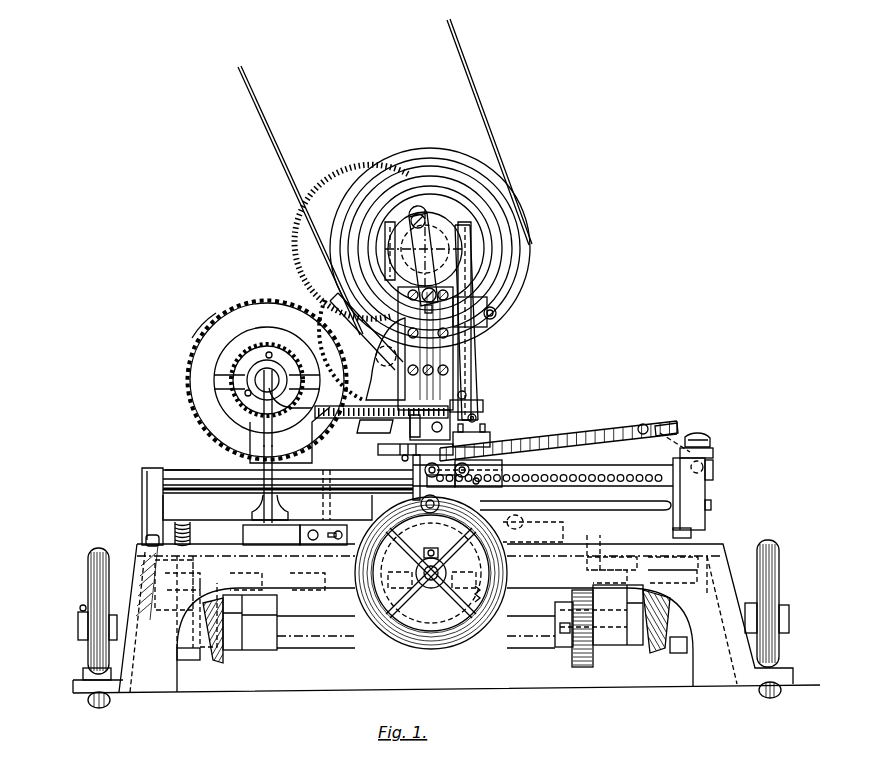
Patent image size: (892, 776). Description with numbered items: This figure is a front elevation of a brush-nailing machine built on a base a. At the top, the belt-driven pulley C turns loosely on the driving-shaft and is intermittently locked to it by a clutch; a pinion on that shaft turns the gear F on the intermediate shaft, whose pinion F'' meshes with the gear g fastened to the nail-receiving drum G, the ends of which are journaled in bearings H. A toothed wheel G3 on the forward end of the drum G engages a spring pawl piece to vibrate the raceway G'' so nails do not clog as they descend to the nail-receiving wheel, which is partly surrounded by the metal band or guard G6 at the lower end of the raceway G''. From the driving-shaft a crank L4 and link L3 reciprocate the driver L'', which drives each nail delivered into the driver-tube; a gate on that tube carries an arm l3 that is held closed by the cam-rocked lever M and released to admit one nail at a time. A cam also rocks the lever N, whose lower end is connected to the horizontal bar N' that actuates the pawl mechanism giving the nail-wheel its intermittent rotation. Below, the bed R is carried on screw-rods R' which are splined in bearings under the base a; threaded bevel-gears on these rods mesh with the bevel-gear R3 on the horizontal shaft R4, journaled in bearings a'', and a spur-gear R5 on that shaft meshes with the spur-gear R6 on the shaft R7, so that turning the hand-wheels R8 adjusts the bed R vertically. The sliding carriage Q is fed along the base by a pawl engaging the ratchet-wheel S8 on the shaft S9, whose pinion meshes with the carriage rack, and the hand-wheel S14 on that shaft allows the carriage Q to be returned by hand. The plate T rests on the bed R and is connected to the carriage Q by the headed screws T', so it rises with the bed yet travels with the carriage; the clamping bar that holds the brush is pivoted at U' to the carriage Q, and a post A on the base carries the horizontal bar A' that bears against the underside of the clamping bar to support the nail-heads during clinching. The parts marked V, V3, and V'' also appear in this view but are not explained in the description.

The base a is at (446, 604).
The cranks or hand-wheels R8 is at (88, 570).
The crank or hand-wheel S14 is at (436, 650).
The shaft S9 is at (431, 588).
The ratchet-wheel S8 is at (471, 596).
The pulley C is at (412, 248).
The crank L4 is at (438, 232).
The link L3 is at (421, 259).
The driver L'' is at (448, 321).
The lever N is at (483, 322).
The horizontal bar N' is at (501, 381).
The lever M is at (483, 404).
The arm l3 is at (485, 418).
The pinion F'' is at (381, 359).
The gear F is at (385, 209).
The nail-receiving drum G is at (267, 380).
The gear g is at (203, 331).
The toothed wheel G3 is at (290, 365).
The raceway G'' is at (330, 416).
The bearings H is at (272, 482).
The metal band or guard G6 is at (423, 432).
The post A is at (254, 499).
The horizontal metal bar A' is at (182, 453).
The bed R is at (267, 495).
The pivot U' is at (450, 477).
The plate T is at (543, 480).
The carriage Q is at (693, 489).
The headed screws T' is at (714, 484).
The nut V'' is at (711, 439).
The link V3 is at (680, 423).
The graduated bar V is at (558, 435).
The shaft R7 is at (295, 617).
The horizontal shaft R4 is at (332, 638).
The bearings a'' is at (433, 617).
The bevel-gear R3 is at (222, 660).
The spur-gear R6 is at (572, 592).
The spur-gear R5 is at (595, 662).
The screw-rods R' is at (462, 602).